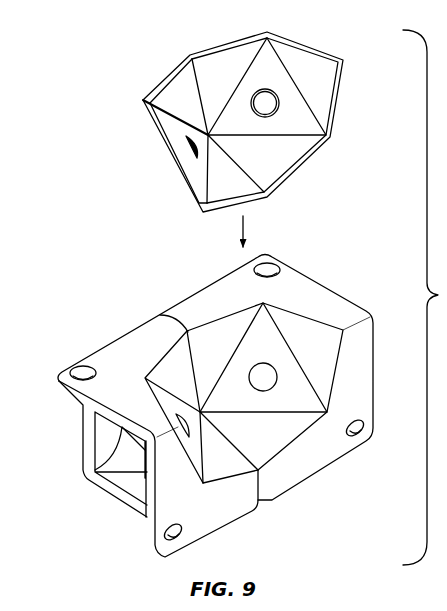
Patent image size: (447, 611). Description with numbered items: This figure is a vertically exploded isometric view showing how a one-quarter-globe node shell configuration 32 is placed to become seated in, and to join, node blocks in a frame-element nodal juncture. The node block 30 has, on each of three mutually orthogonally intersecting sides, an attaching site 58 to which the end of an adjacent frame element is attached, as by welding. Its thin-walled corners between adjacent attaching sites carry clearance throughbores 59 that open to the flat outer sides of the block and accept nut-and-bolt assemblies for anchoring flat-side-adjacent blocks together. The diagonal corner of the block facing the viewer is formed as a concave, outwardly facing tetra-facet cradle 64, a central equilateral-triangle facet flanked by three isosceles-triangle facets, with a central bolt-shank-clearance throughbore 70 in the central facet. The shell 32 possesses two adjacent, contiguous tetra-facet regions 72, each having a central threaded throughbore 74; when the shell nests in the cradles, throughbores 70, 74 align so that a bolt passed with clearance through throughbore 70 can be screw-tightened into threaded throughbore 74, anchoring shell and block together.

The node block 30 is at (225, 393).
The one-quarter-globe shell configuration 32 is at (216, 111).
The attaching site 58 is at (107, 489).
The clearance throughbores 59 is at (272, 267).
The tetra-facet cradle 64 is at (318, 340).
The bolt-shank-clearance throughbore 70 is at (276, 383).
The tetra-facet regions 72 is at (177, 93).
The threaded throughbores 74 is at (270, 112).